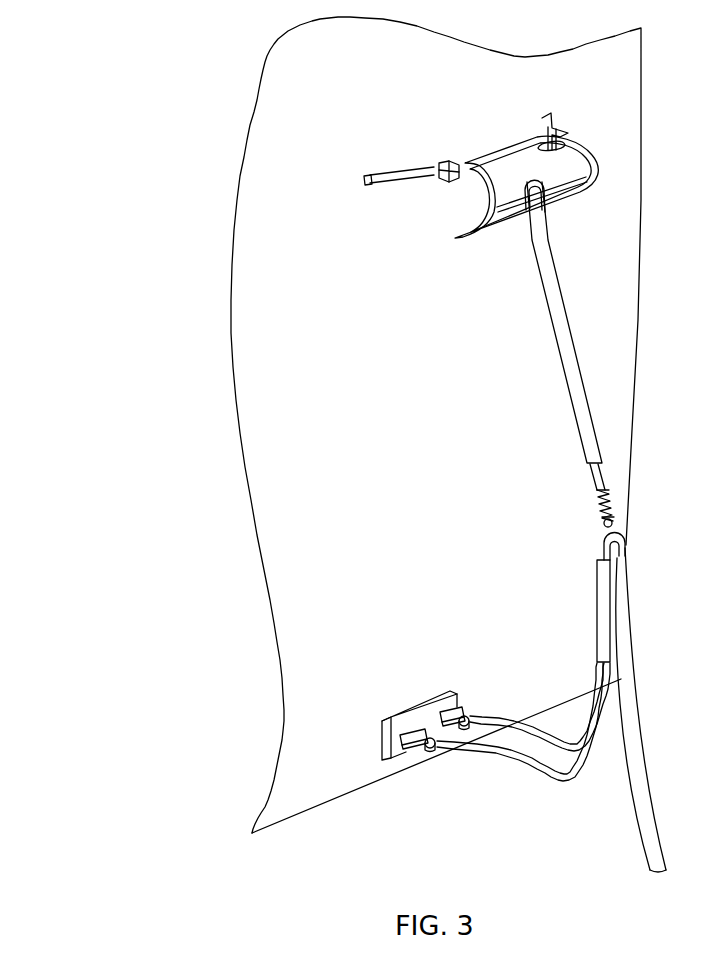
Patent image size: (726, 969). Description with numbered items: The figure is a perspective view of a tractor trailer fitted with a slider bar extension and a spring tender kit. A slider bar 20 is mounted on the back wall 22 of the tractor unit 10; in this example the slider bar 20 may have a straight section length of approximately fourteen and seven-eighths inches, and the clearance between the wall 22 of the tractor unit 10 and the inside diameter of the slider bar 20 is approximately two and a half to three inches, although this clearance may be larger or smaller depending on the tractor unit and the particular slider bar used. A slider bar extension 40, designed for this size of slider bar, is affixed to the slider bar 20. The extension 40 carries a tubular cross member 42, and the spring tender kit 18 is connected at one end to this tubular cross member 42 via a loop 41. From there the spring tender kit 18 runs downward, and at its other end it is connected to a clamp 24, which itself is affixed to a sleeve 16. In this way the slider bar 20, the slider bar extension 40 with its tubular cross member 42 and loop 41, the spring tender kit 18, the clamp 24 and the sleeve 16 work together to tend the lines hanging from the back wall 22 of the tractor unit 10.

The tractor unit 10 is at (149, 564).
The sleeve 16 is at (606, 608).
The spring tender kit 18 is at (558, 312).
The slider bar 20 is at (404, 182).
The back wall 22 is at (372, 393).
The clamp 24 is at (603, 546).
The slider bar extension 40 is at (452, 251).
The loop 41 is at (546, 202).
The tubular cross member 42 is at (596, 183).